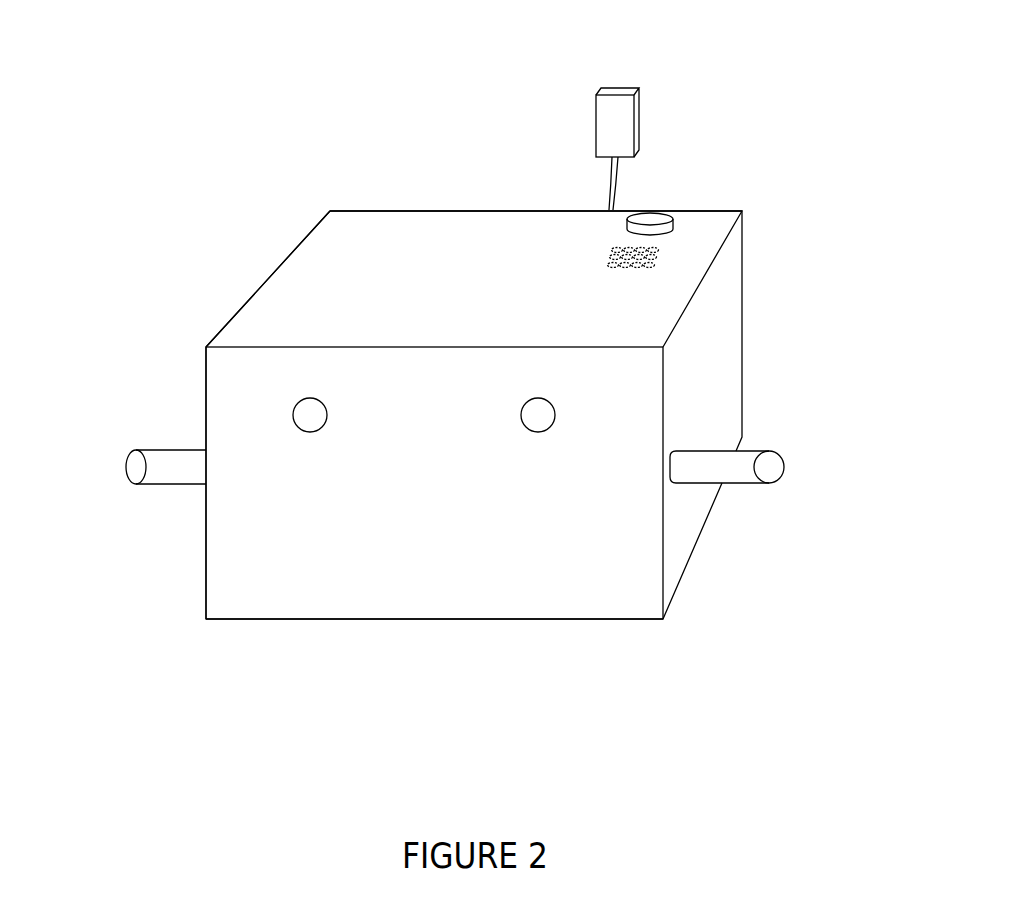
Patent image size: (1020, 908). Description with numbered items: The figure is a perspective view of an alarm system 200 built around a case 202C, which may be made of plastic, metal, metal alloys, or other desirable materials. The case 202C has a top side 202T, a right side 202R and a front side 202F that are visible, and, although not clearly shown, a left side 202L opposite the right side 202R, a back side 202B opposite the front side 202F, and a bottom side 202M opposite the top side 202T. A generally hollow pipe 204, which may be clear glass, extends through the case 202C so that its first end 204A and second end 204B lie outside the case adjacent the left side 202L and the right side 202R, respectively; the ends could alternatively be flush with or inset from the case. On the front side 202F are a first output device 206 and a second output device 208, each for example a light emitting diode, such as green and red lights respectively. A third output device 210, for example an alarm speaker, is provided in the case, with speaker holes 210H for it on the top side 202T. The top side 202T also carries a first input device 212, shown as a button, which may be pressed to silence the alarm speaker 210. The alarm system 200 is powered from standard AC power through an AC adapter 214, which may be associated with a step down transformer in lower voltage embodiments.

The alarm system 200 is at (270, 103).
The back side 202B is at (445, 185).
The case 202C is at (200, 325).
The top side 202T is at (353, 263).
The right side 202R is at (717, 340).
The left side 202L is at (185, 552).
The front side 202F is at (292, 582).
The bottom side 202M is at (460, 643).
The pipe 204 is at (133, 454).
The first end 204A is at (128, 468).
The second end 204B is at (772, 470).
The first output device 206 is at (320, 428).
The second output device 208 is at (542, 430).
The third output device 210 is at (709, 242).
The speaker holes 210H is at (670, 250).
The first input device 212 is at (650, 212).
The AC adapter 214 is at (630, 118).